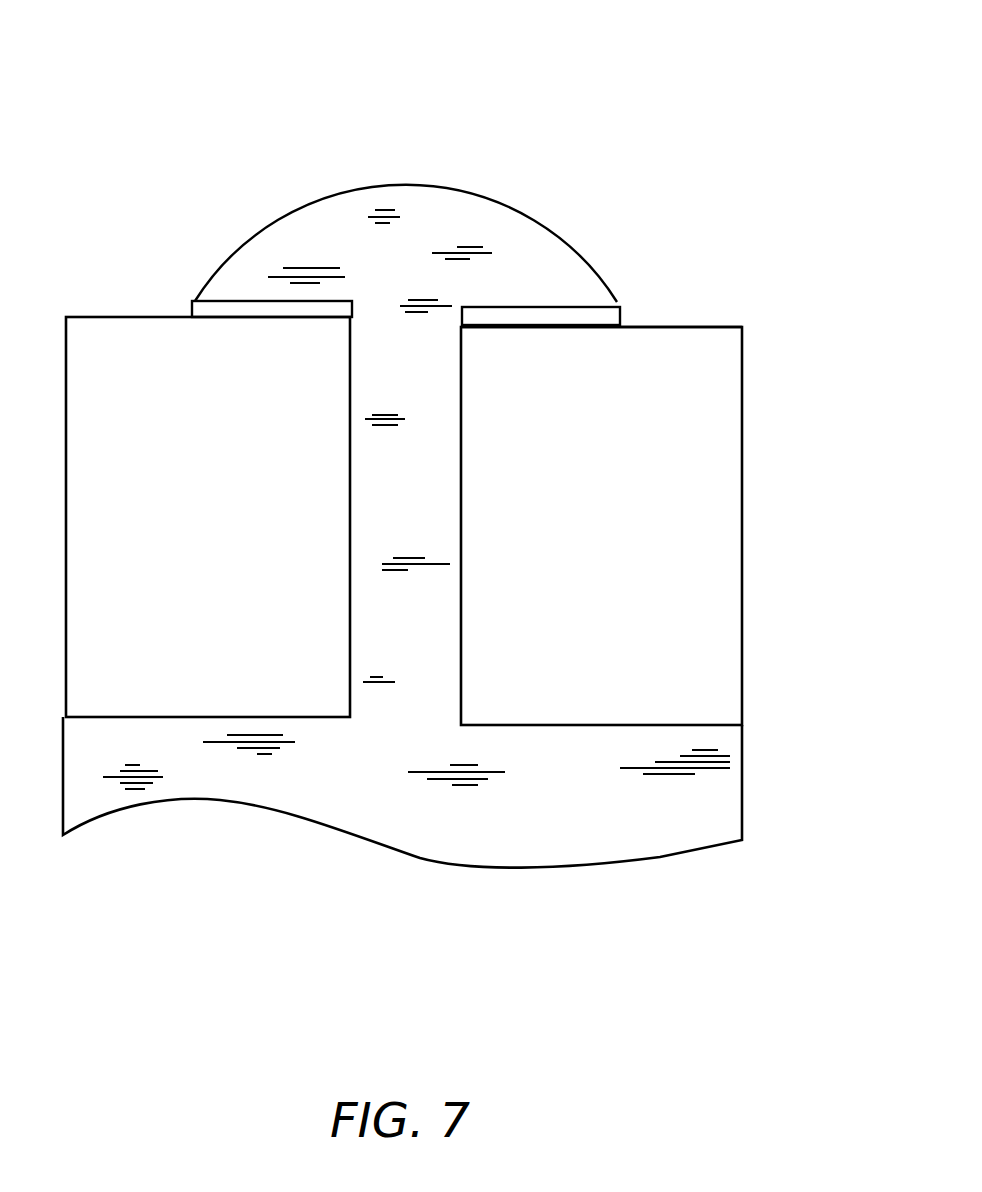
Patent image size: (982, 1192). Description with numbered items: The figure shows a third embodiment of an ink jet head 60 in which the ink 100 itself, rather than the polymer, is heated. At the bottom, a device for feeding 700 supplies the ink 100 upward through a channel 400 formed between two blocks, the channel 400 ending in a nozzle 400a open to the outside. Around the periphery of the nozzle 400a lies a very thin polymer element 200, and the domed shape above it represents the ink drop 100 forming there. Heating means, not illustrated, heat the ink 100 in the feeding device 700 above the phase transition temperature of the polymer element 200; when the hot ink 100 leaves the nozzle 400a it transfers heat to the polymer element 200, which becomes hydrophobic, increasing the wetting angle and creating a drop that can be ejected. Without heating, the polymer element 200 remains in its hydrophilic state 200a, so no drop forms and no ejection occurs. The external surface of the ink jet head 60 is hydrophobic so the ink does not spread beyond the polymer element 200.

The ink jet head 60 is at (62, 255).
The ink 100 is at (428, 635).
The polymer element 200 is at (531, 275).
The hydrophilic state 200a is at (586, 312).
The channel 400 is at (461, 542).
The nozzle 400a is at (461, 415).
The device for feeding 700 is at (235, 777).